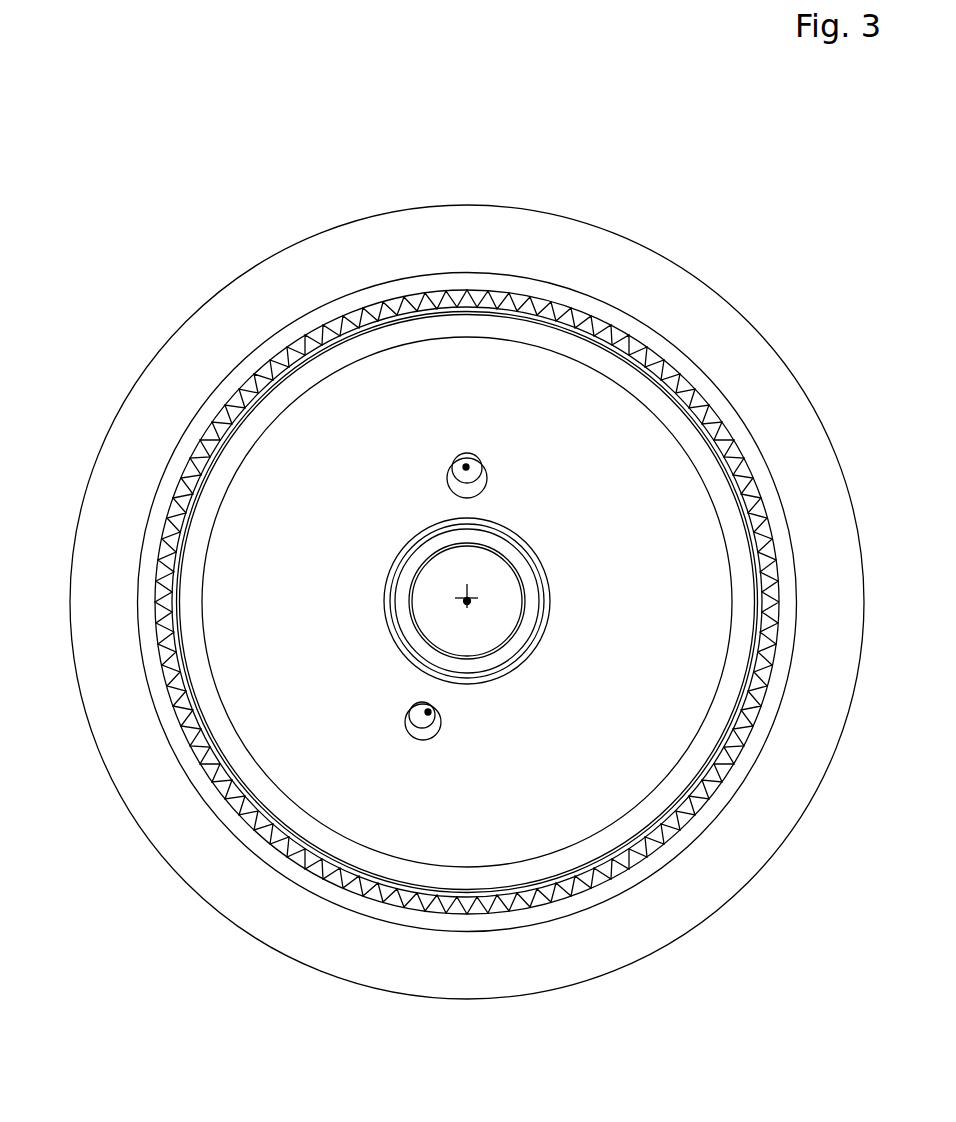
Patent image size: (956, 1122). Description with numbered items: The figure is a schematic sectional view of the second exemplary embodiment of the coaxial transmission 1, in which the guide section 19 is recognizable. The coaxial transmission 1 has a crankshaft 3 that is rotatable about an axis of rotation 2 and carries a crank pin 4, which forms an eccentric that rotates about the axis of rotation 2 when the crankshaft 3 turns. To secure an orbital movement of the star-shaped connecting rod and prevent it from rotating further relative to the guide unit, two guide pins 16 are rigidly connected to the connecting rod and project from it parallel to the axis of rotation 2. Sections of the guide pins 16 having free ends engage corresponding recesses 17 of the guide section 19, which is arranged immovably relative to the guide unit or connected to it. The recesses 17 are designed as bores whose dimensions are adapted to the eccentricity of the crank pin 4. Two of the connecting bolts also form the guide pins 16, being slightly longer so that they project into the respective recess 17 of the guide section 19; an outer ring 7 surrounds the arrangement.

The coaxial transmission 1 is at (222, 143).
The axis of rotation 2 is at (467, 601).
The crankshaft 3 is at (467, 600).
The crank pin 4 is at (405, 597).
The housing ring 7 is at (637, 303).
The guide pins 16 is at (467, 464).
The recesses 17 is at (450, 482).
The guide section 19 is at (596, 753).